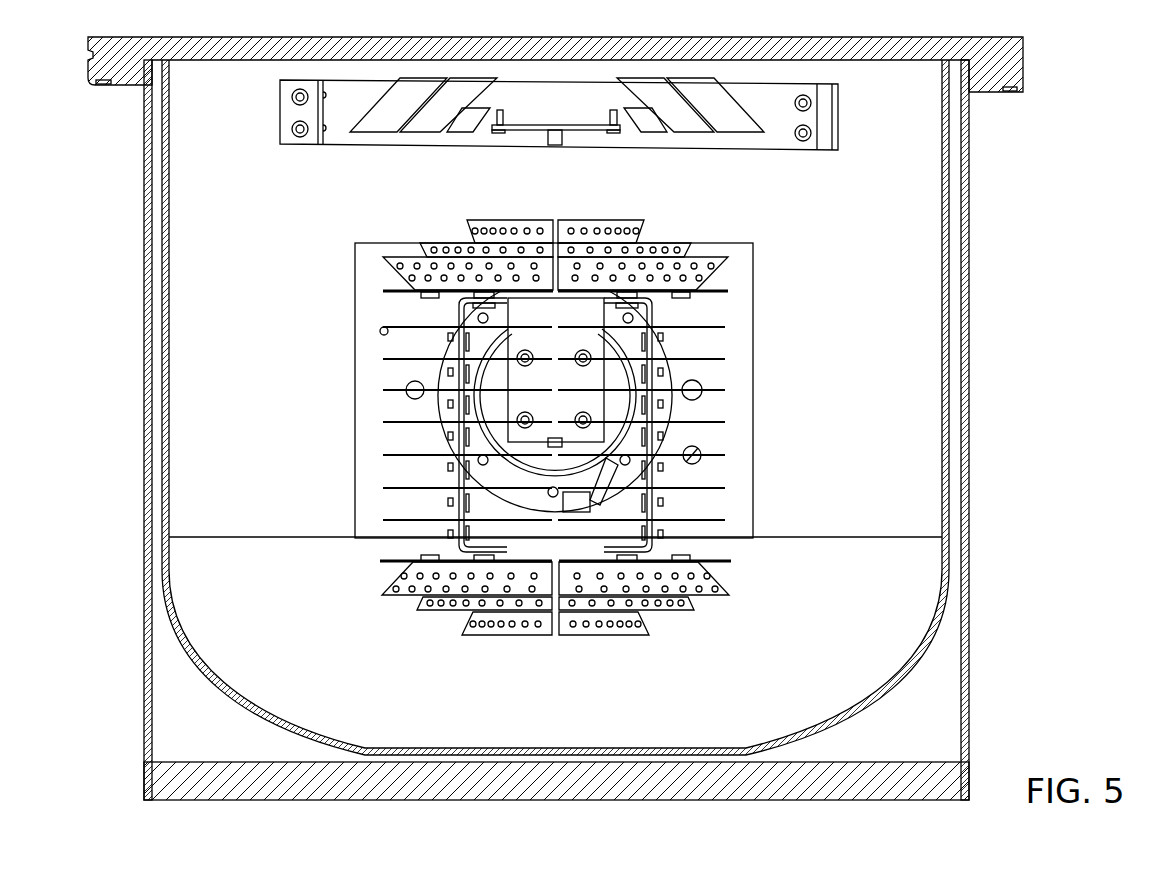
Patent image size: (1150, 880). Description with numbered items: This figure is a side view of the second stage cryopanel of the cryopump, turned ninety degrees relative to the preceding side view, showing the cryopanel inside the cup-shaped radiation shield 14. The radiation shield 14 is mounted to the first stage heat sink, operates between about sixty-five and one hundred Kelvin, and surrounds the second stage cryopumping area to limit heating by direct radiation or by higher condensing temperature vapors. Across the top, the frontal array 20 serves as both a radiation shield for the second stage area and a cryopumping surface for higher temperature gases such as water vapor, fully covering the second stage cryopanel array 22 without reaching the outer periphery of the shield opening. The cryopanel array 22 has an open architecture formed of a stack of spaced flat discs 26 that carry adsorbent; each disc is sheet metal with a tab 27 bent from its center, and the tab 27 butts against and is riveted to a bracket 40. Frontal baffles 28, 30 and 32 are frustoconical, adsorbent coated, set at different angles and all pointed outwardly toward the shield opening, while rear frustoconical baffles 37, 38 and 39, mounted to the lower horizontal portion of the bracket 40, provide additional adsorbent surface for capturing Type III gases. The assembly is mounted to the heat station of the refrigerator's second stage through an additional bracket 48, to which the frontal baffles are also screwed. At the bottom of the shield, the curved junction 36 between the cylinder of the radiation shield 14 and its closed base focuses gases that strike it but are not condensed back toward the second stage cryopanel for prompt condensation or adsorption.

The radiation shield 14 is at (170, 447).
The frontal array 20 is at (775, 161).
The second stage cryopanel array 22 is at (793, 259).
The flat discs 26 is at (727, 360).
The tab 27 is at (655, 412).
The frontal baffle 28 is at (560, 220).
The frontal baffle 30 is at (441, 243).
The frontal baffle 32 is at (399, 256).
The junction 36 is at (262, 706).
The rear frustoconical baffle 37 is at (396, 597).
The rear frustoconical baffle 38 is at (443, 612).
The rear frustoconical baffle 39 is at (542, 636).
The bracket 40 is at (456, 311).
The additional bracket 48 is at (545, 385).